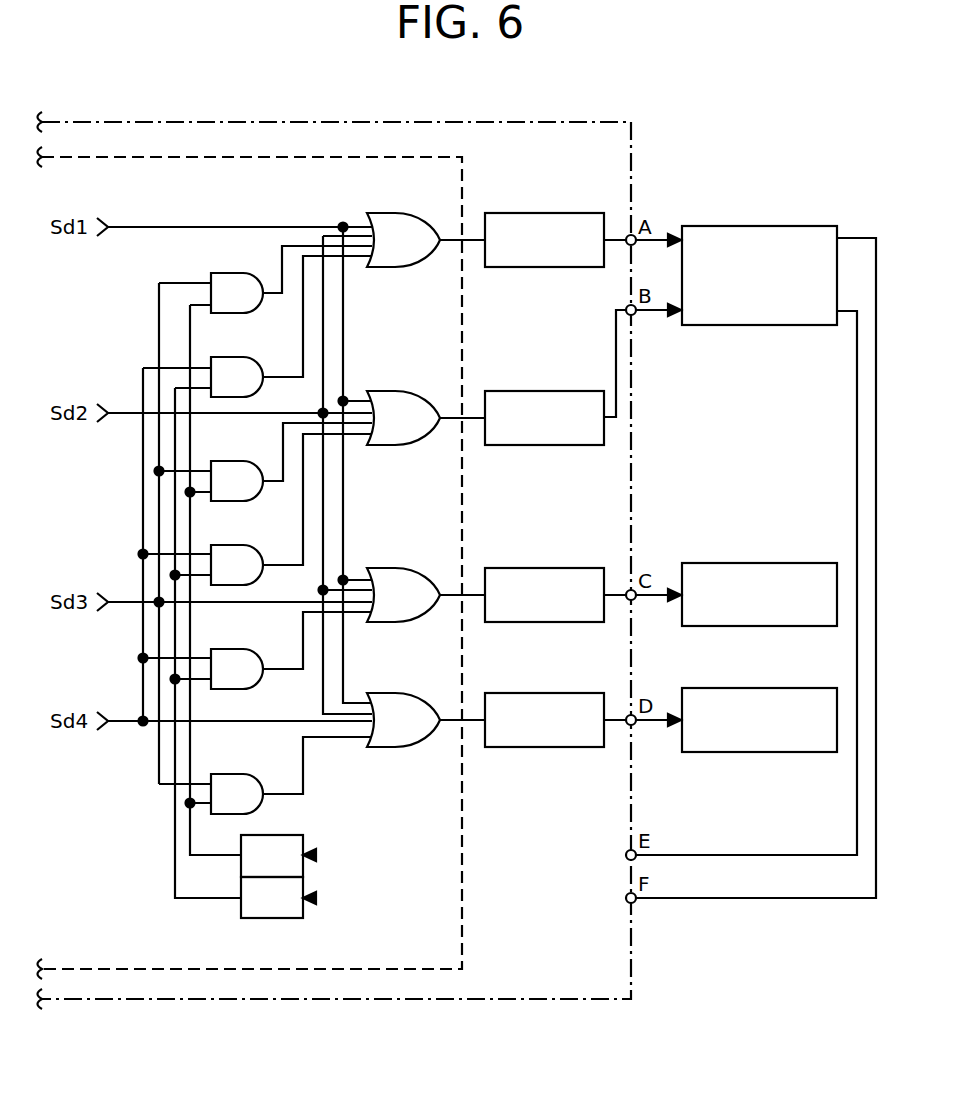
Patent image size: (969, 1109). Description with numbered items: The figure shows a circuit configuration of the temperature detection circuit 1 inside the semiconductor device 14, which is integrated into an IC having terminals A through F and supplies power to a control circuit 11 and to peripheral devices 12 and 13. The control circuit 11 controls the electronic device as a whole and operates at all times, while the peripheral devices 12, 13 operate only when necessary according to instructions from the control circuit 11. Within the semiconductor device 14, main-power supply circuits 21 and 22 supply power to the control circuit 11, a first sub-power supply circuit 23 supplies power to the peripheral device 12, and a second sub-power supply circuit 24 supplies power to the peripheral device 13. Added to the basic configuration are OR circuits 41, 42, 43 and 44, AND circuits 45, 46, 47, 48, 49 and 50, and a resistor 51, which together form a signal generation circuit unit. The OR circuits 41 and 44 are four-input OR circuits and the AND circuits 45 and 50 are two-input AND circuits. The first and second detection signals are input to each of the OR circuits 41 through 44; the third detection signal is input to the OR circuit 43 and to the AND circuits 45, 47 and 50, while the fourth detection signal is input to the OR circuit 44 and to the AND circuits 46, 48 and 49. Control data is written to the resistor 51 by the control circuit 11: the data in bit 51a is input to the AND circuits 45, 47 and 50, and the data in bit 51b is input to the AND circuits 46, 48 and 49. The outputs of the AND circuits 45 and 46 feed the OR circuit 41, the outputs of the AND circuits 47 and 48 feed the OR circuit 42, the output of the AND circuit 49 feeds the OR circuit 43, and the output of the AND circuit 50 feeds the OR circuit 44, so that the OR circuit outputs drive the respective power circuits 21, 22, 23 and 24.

The temperature detection circuit 1 is at (322, 150).
The semiconductor device 14 is at (639, 176).
The control circuit 11 is at (792, 224).
The peripheral device 12 is at (792, 561).
The peripheral device 13 is at (792, 684).
The main-power supply circuit 21 is at (576, 213).
The main-power supply circuit 22 is at (576, 391).
The first sub-power supply circuit 23 is at (576, 568).
The second sub-power supply circuit 24 is at (576, 693).
The OR circuit 41 is at (394, 213).
The OR circuit 42 is at (394, 391).
The OR circuit 43 is at (394, 568).
The OR circuit 44 is at (394, 693).
The AND circuit 45 is at (234, 273).
The AND circuit 46 is at (234, 357).
The AND circuit 47 is at (234, 461).
The AND circuit 48 is at (234, 545).
The AND circuit 49 is at (234, 649).
The AND circuit 50 is at (234, 774).
The resistor 51 is at (292, 901).
The bit 51a is at (278, 856).
The bit 51b is at (291, 924).